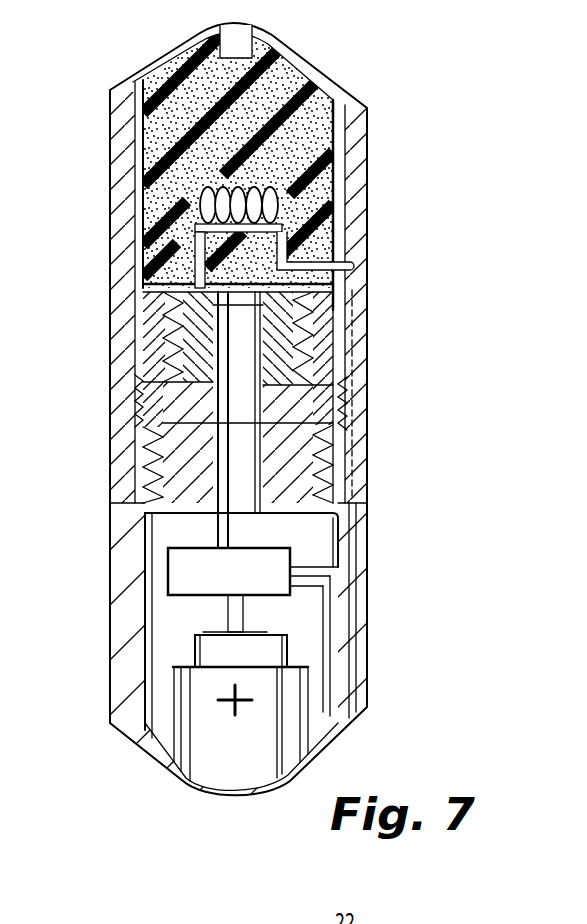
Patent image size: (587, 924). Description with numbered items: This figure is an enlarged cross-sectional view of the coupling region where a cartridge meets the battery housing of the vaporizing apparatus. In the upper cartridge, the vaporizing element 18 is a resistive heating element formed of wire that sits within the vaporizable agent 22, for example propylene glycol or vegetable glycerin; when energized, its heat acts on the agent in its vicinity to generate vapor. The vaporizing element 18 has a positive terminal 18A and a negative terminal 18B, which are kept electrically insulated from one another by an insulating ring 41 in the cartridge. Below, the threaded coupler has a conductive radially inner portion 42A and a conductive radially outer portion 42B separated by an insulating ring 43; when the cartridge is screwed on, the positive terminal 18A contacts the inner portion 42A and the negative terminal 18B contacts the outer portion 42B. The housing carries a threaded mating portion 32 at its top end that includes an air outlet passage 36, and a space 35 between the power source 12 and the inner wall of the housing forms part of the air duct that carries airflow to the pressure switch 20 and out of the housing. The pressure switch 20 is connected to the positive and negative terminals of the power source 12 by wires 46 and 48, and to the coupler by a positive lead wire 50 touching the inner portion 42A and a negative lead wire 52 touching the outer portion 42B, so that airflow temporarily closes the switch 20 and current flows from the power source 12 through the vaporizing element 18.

The power source 12 is at (247, 768).
The vaporizing element 18 is at (184, 208).
The positive terminal 18A is at (140, 297).
The negative terminal 18B is at (352, 265).
The pressure switch 20 is at (185, 573).
The vaporizable agent 22 is at (167, 78).
The threaded mating portion 32 is at (290, 452).
The space 35 is at (160, 700).
The air outlet passage 36 is at (243, 487).
The insulating ring 41 is at (130, 243).
The radially inner portion 42A is at (160, 362).
The radially outer portion 42B is at (340, 378).
The insulating ring 43 is at (140, 432).
The wire 46 is at (232, 612).
The wire 48 is at (322, 630).
The positive lead wire 50 is at (218, 528).
The negative lead wire 52 is at (312, 562).